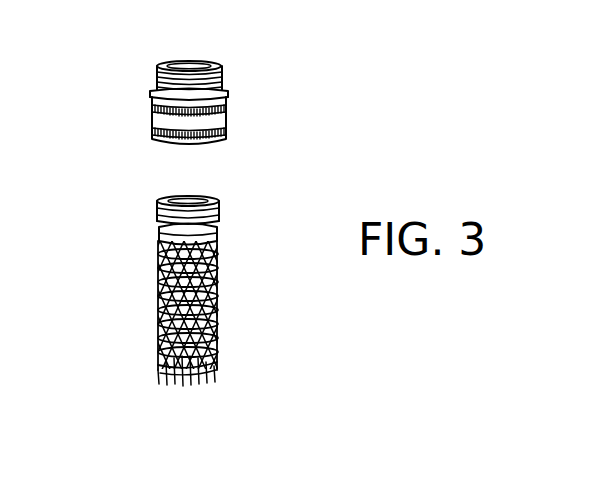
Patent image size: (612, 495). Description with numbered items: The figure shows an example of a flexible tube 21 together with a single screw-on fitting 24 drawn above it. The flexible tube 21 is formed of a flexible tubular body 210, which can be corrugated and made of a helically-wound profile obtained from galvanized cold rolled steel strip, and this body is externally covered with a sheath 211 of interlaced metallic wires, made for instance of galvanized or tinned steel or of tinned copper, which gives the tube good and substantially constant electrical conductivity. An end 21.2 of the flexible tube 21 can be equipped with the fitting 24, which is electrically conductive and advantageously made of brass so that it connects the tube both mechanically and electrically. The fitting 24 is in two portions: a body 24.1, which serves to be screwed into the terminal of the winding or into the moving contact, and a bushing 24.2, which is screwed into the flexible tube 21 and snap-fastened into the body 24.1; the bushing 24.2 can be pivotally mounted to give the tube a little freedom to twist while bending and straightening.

The screw-on fitting 24 is at (140, 60).
The body of the fitting 24.1 is at (226, 82).
The bushing 24.2 is at (220, 205).
The flexible tube 21 is at (221, 288).
The end of the flexible tube 21.2 is at (157, 233).
The flexible tubular body 210 is at (157, 352).
The sheath 211 is at (165, 390).